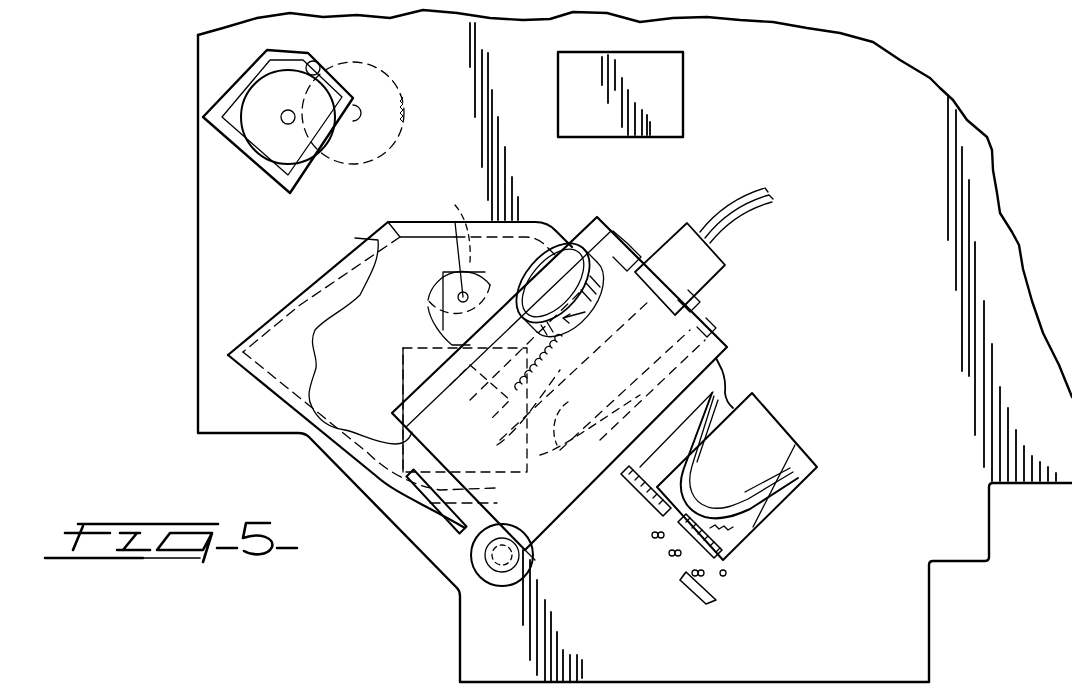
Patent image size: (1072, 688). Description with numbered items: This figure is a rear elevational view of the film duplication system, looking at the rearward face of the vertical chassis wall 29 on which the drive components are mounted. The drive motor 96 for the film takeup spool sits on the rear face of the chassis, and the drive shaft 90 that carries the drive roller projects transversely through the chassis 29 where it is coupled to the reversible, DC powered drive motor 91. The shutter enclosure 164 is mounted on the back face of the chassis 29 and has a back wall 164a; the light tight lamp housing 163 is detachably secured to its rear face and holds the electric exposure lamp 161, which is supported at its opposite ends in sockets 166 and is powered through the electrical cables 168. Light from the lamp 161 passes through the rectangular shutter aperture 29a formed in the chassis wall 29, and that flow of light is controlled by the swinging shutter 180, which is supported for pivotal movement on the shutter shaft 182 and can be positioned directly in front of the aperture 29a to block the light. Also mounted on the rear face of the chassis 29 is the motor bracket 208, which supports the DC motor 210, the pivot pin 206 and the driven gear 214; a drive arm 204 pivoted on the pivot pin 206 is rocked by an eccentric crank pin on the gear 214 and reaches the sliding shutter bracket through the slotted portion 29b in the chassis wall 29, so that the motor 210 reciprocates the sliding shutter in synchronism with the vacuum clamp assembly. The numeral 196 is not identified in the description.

The chassis 29 is at (946, 399).
The shutter aperture 29a is at (577, 394).
The slotted portion 29b is at (620, 490).
The drive shaft 90 is at (503, 580).
The drive motor 91 is at (533, 556).
The drive motor 96 is at (268, 135).
The electric exposure lamp 161 is at (706, 337).
The lamp housing 163 is at (618, 236).
The shutter enclosure 164 is at (403, 495).
The back wall 164a is at (308, 368).
The sockets 166 is at (700, 305).
The electrical cables 168 is at (737, 205).
The swinging shutter 180 is at (438, 370).
The shutter shaft 182 is at (463, 298).
The motor end cap 196 is at (512, 263).
The drive arm 204 is at (682, 570).
The pivot pin 206 is at (657, 538).
The motor bracket 208 is at (750, 512).
The DC motor 210 is at (748, 467).
The driven gear 214 is at (727, 573).